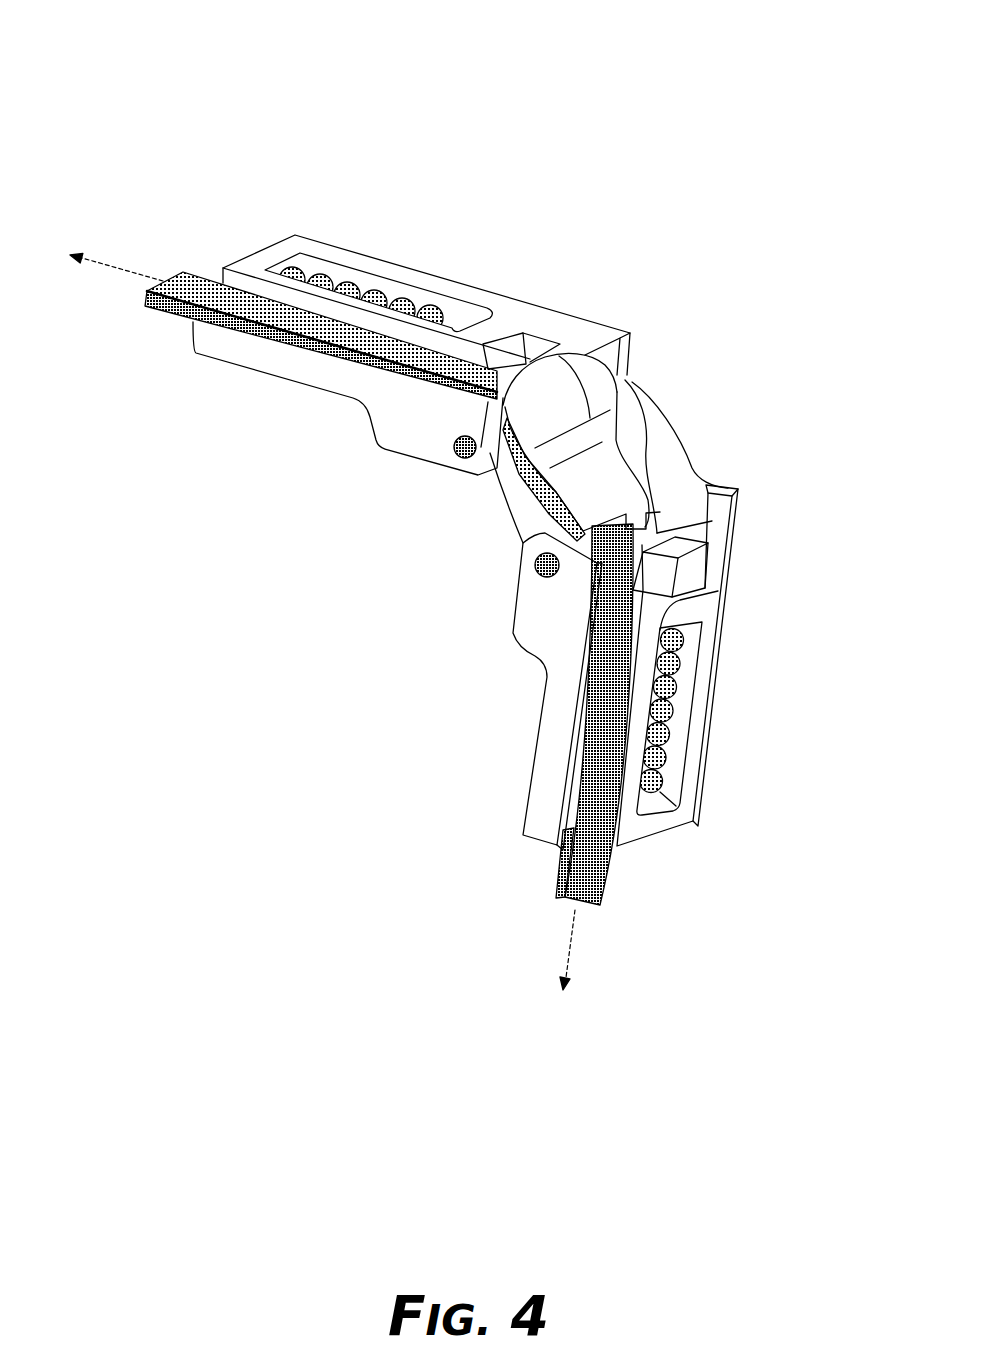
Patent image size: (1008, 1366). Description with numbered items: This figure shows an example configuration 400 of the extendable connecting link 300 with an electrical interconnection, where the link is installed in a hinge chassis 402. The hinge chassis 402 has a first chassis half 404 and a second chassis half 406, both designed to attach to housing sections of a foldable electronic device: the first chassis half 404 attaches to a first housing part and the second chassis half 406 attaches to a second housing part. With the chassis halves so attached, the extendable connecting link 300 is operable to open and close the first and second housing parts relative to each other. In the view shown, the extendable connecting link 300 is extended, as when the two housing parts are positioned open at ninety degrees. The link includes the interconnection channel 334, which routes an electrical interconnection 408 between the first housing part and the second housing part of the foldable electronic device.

The example configuration 400 is at (757, 72).
The hinge chassis 402 is at (525, 295).
The first chassis half 404 is at (383, 260).
The second chassis half 406 is at (730, 597).
The electrical interconnection 408 is at (185, 316).
The extendable connecting link 300 is at (680, 412).
The interconnection channel 334 is at (535, 519).